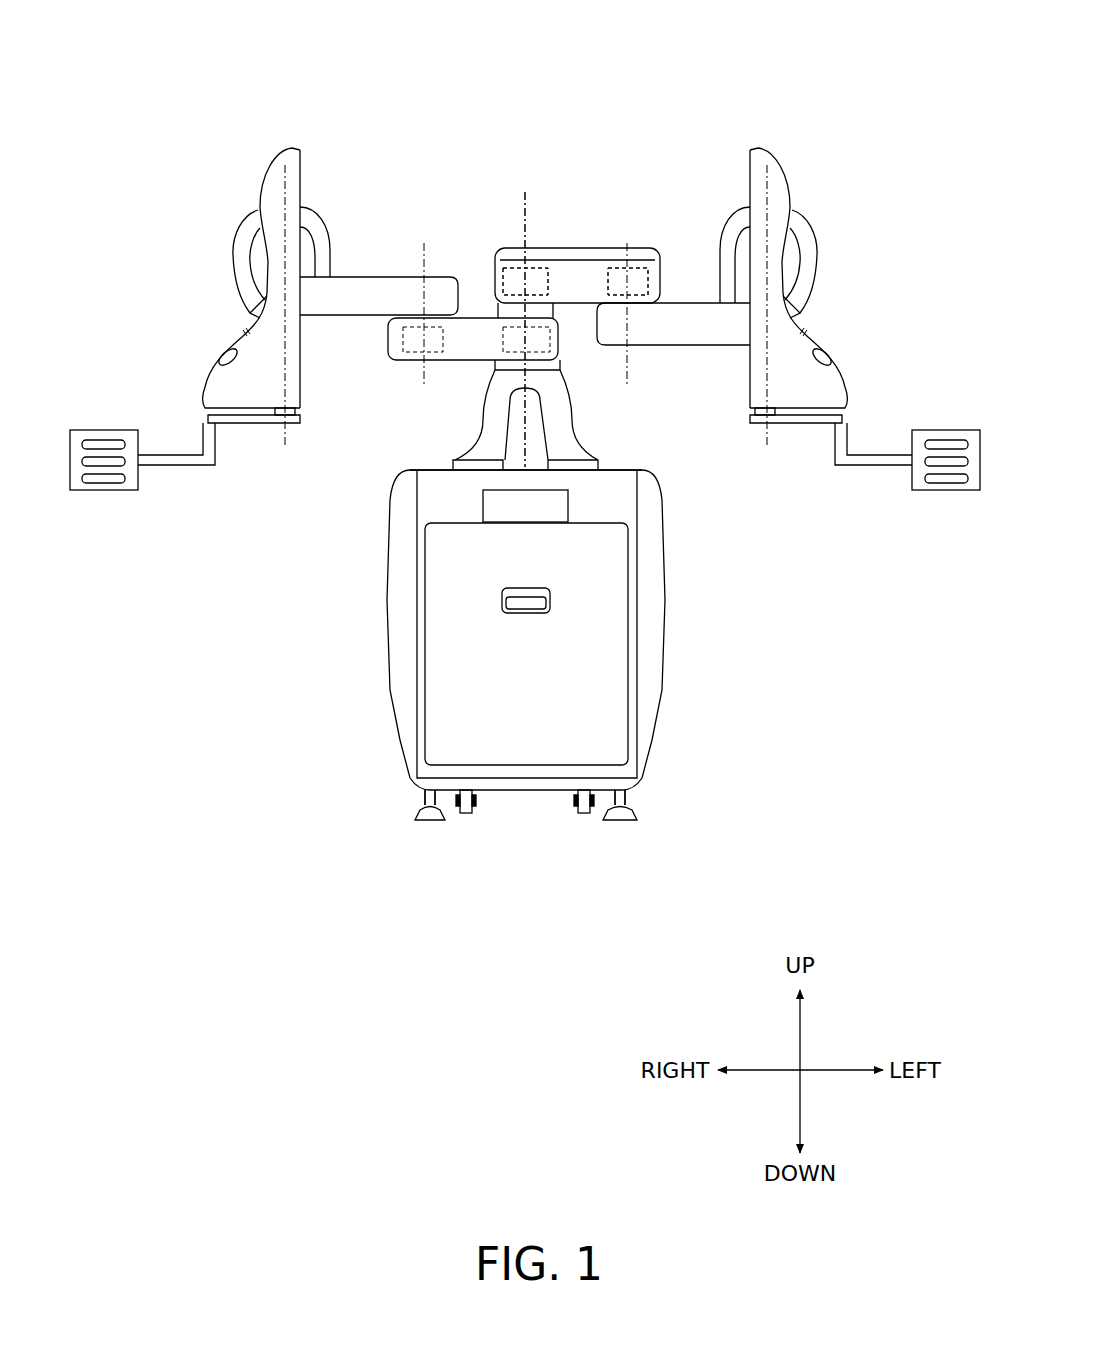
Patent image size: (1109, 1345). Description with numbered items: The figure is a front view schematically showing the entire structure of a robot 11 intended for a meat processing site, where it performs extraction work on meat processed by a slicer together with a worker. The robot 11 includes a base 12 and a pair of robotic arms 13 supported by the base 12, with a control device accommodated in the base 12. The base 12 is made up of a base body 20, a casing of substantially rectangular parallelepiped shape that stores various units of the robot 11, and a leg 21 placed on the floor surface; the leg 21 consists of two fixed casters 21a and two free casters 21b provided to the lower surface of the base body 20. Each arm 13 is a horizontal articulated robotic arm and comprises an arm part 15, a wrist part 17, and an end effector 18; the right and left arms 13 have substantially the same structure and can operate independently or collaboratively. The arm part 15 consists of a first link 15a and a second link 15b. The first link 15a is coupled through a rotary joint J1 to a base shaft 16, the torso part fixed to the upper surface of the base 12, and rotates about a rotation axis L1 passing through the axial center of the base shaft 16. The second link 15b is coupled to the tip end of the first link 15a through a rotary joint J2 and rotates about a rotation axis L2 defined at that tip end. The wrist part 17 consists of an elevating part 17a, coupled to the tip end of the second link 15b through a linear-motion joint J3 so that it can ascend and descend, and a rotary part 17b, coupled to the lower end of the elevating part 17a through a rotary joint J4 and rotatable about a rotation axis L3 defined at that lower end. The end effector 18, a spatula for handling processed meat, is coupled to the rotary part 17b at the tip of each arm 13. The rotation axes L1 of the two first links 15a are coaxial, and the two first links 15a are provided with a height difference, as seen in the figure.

The robot 11 is at (717, 114).
The base 12 is at (670, 575).
The robotic arm 13 is at (298, 144).
The arm part 15 is at (480, 166).
The first link 15a is at (483, 318).
The second link 15b is at (372, 276).
The base shaft 16 is at (597, 420).
The wrist part 17 is at (246, 333).
The elevating part 17a is at (216, 366).
The rotary part 17b is at (208, 422).
The end effector 18 is at (105, 430).
The base body 20 is at (666, 622).
The leg 21 is at (644, 806).
The fixed caster 21a is at (430, 822).
The free caster 21b is at (466, 815).
The rotary joint J1 is at (510, 262).
The rotary joint J2 is at (388, 340).
The linear-motion joint J3 is at (275, 197).
The rotary joint J4 is at (305, 412).
The rotation axis L1 is at (525, 312).
The rotation axis L2 is at (525, 298).
The rotation axis L3 is at (283, 180).